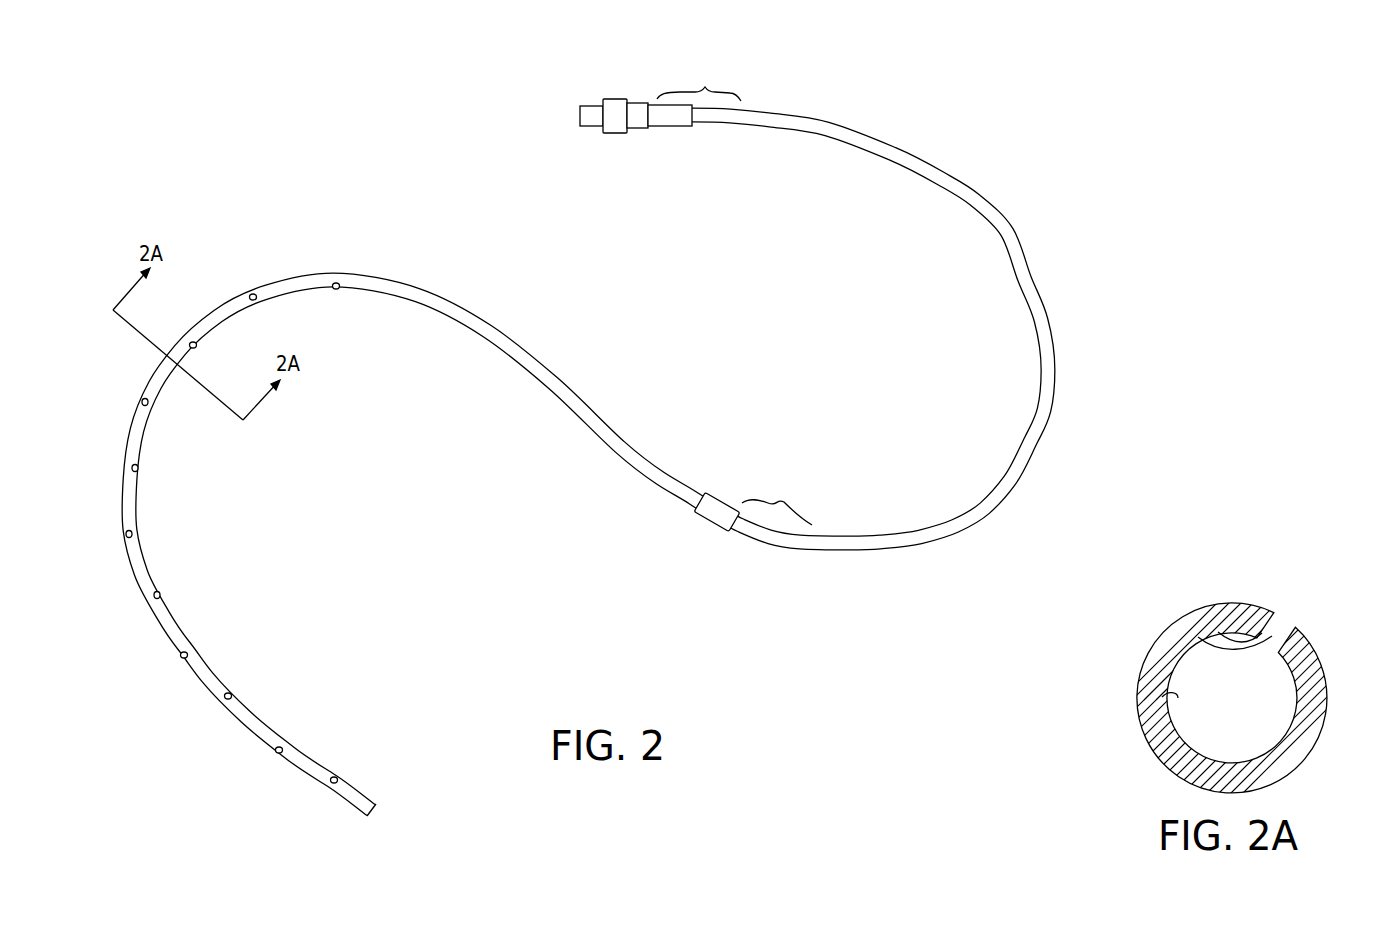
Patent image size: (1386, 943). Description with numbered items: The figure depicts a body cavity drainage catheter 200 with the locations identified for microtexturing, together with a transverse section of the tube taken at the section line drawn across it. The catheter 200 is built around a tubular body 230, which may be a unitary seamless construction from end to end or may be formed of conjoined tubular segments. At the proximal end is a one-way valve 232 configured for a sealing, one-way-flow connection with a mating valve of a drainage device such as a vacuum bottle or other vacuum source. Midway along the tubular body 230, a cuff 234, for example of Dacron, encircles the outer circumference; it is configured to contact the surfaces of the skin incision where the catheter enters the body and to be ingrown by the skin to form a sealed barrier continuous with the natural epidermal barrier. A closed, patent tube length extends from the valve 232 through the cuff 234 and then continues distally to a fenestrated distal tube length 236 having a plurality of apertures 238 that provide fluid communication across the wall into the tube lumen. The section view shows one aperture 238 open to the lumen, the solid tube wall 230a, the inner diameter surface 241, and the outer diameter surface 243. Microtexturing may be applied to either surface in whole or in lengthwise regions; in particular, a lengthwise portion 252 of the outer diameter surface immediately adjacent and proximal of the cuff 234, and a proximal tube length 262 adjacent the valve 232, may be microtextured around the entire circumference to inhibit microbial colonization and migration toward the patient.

In FIG. 2, the body cavity drainage catheter 200 is at (285, 151).
In FIG. 2, the tubular body 230 is at (1056, 459).
In FIG. 2, the one-way valve 232 is at (615, 114).
In FIG. 2, the cuff 234 is at (715, 518).
In FIG. 2, the fenestrated distal tube length 236 is at (484, 330).
In FIG. 2, the fenestrations/apertures 238 is at (138, 467).
In FIG. 2A, the fenestrations/apertures 238 is at (1200, 637).
In FIG. 2, the lengthwise portion of the outer diameter surface 252 is at (770, 506).
In FIG. 2, the proximal tube length 262 is at (708, 90).
In FIG. 2A, the outer diameter surface 243 is at (1197, 606).
In FIG. 2A, the inner diameter surface 241 is at (1168, 695).
In FIG. 2A, the tube wall 230a is at (1282, 762).